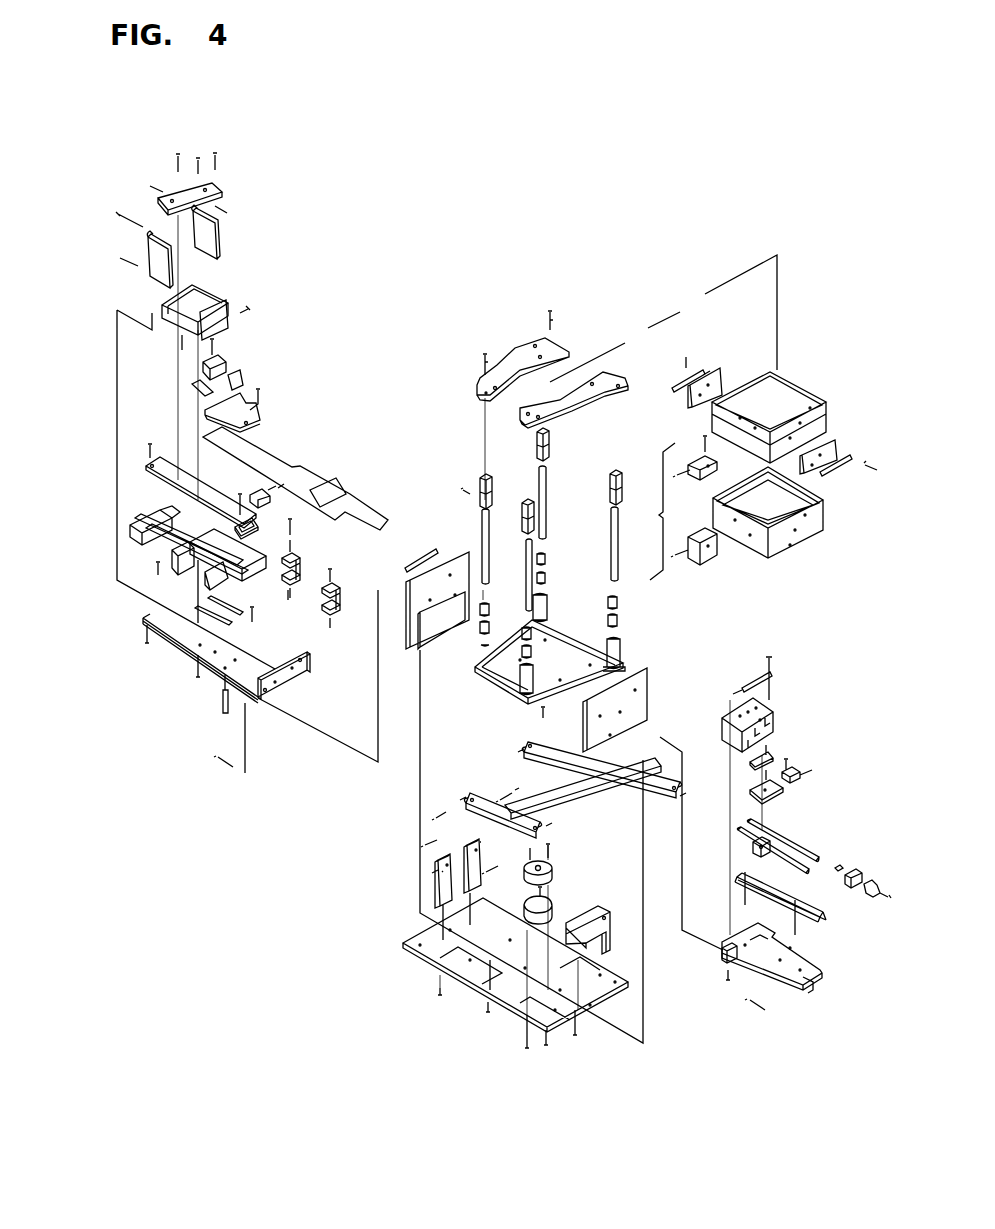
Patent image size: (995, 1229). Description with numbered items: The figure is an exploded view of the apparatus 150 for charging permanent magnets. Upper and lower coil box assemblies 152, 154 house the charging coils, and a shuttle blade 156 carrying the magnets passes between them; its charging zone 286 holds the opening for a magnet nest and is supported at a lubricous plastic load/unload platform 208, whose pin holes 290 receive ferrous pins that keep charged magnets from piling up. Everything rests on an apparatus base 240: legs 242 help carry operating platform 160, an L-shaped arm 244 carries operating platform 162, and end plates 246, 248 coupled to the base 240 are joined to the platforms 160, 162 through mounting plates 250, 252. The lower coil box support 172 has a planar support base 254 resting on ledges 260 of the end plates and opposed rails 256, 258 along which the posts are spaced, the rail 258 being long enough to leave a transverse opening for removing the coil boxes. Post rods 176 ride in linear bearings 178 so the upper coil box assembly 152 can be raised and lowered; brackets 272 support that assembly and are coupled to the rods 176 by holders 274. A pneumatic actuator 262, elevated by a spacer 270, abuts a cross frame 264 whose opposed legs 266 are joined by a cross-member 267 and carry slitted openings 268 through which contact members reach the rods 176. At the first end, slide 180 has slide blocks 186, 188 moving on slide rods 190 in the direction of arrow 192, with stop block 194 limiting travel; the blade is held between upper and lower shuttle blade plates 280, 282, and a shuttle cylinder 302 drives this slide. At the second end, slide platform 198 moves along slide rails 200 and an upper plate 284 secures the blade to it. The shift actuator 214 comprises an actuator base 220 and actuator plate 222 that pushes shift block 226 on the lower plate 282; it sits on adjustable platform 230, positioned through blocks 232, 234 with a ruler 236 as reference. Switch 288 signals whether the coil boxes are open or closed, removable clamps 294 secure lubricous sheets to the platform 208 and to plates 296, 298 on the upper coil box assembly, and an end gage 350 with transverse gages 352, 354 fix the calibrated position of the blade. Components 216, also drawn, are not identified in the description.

The apparatus 150 is at (531, 226).
The upper coil box assembly 152 is at (792, 400).
The lower coil box assembly 154 is at (805, 548).
The shuttle blade 156 is at (307, 466).
The operating platform 160 is at (278, 650).
The operating platform 162 is at (800, 958).
The lower coil box support 172 is at (510, 692).
The post rods 176 is at (646, 555).
The linear bearing 178 is at (490, 650).
The slide 180 is at (242, 535).
The slide block 186 is at (242, 588).
The slide block 188 is at (157, 510).
The slide rods 190 is at (187, 522).
The arrow 192 is at (180, 565).
The stop block 194 is at (200, 583).
The slide platform 198 is at (752, 790).
The slide rails 200 is at (814, 847).
The load/unload platform 208 is at (756, 844).
The shift actuator 214 is at (224, 287).
The clamp 216 is at (332, 590).
The actuator base 220 is at (175, 318).
The actuator plate 222 is at (207, 305).
The shift block 226 is at (213, 362).
The adjustable platform 230 is at (188, 185).
The block 232 is at (150, 270).
The block 234 is at (208, 243).
The ruler 236 is at (148, 260).
The apparatus base 240 is at (540, 1000).
The legs 242 is at (440, 884).
The "L" shaped arm 244 is at (605, 925).
The end plate 246 is at (448, 562).
The end plate 248 is at (640, 680).
The mounting plate 250 is at (296, 680).
The mounting plate 252 is at (728, 945).
The planar support base 254 is at (523, 647).
The rail 256 is at (493, 680).
The rail 258 is at (568, 628).
The ledges 260 is at (420, 632).
The pneumatic actuator 262 is at (550, 868).
The cross frame 264 is at (548, 808).
The legs 266 is at (600, 777).
The cross-member 267 is at (558, 772).
The slitted openings 268 is at (545, 826).
The spacer 270 is at (550, 898).
The brackets 272 is at (608, 385).
The holders 274 is at (620, 472).
The upper shuttle blade plate 280 is at (238, 398).
The lower shuttle blade plate 282 is at (160, 456).
The upper plate 284 is at (770, 760).
The charging zone 286 is at (345, 485).
The switch 288 is at (662, 514).
The pin holes 290 is at (752, 712).
The removable clamps 294 is at (775, 670).
The plate 296 is at (722, 380).
The plate 298 is at (838, 447).
The shuttle cylinder 302 is at (168, 520).
The end gage 350 is at (168, 382).
The transverse gage 352 is at (258, 492).
The transverse gage 354 is at (802, 770).